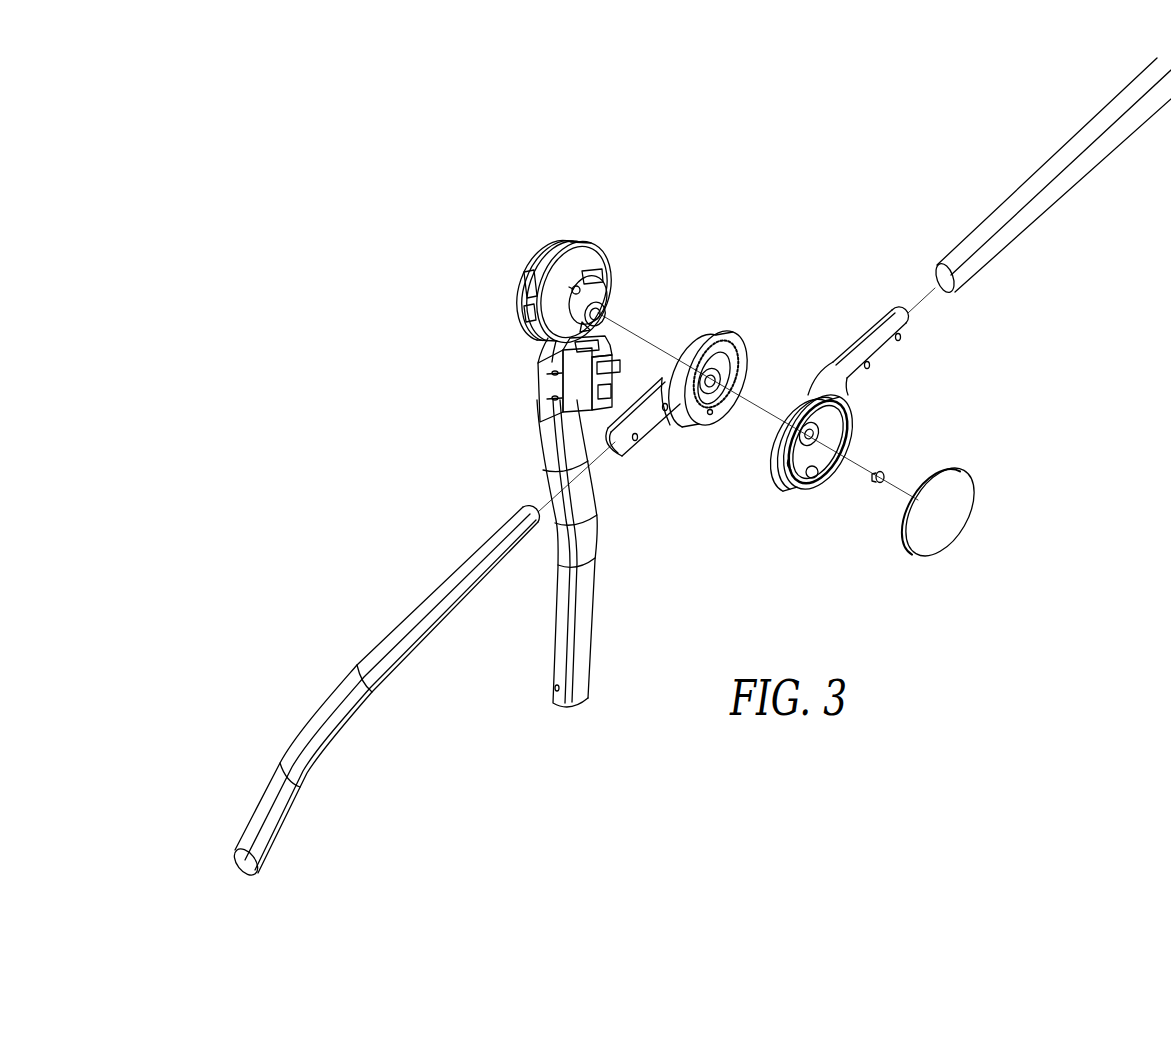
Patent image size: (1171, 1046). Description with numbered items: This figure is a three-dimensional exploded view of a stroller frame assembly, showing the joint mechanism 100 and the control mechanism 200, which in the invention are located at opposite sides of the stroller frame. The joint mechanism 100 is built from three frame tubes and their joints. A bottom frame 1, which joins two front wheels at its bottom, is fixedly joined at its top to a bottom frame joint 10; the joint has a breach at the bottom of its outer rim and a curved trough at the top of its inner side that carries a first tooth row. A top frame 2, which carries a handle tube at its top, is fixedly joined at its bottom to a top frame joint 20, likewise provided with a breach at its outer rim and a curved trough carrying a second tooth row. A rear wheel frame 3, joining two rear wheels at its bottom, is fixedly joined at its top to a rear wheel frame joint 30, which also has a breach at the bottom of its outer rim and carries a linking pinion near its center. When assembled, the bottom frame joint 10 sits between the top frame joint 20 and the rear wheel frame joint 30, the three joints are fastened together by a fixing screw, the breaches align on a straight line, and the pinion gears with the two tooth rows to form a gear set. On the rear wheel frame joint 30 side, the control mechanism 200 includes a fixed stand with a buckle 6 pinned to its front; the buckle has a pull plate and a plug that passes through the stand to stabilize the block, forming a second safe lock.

The bottom frame 1 is at (425, 607).
The top frame 2 is at (1065, 177).
The rear wheel frame 3 is at (582, 592).
The buckle 6 is at (605, 385).
The bottom frame joint 10 is at (714, 327).
The top frame joint 20 is at (777, 463).
The rear wheel frame joint 30 is at (603, 270).
The joint mechanism 100 is at (763, 387).
The control mechanism 200 is at (571, 315).